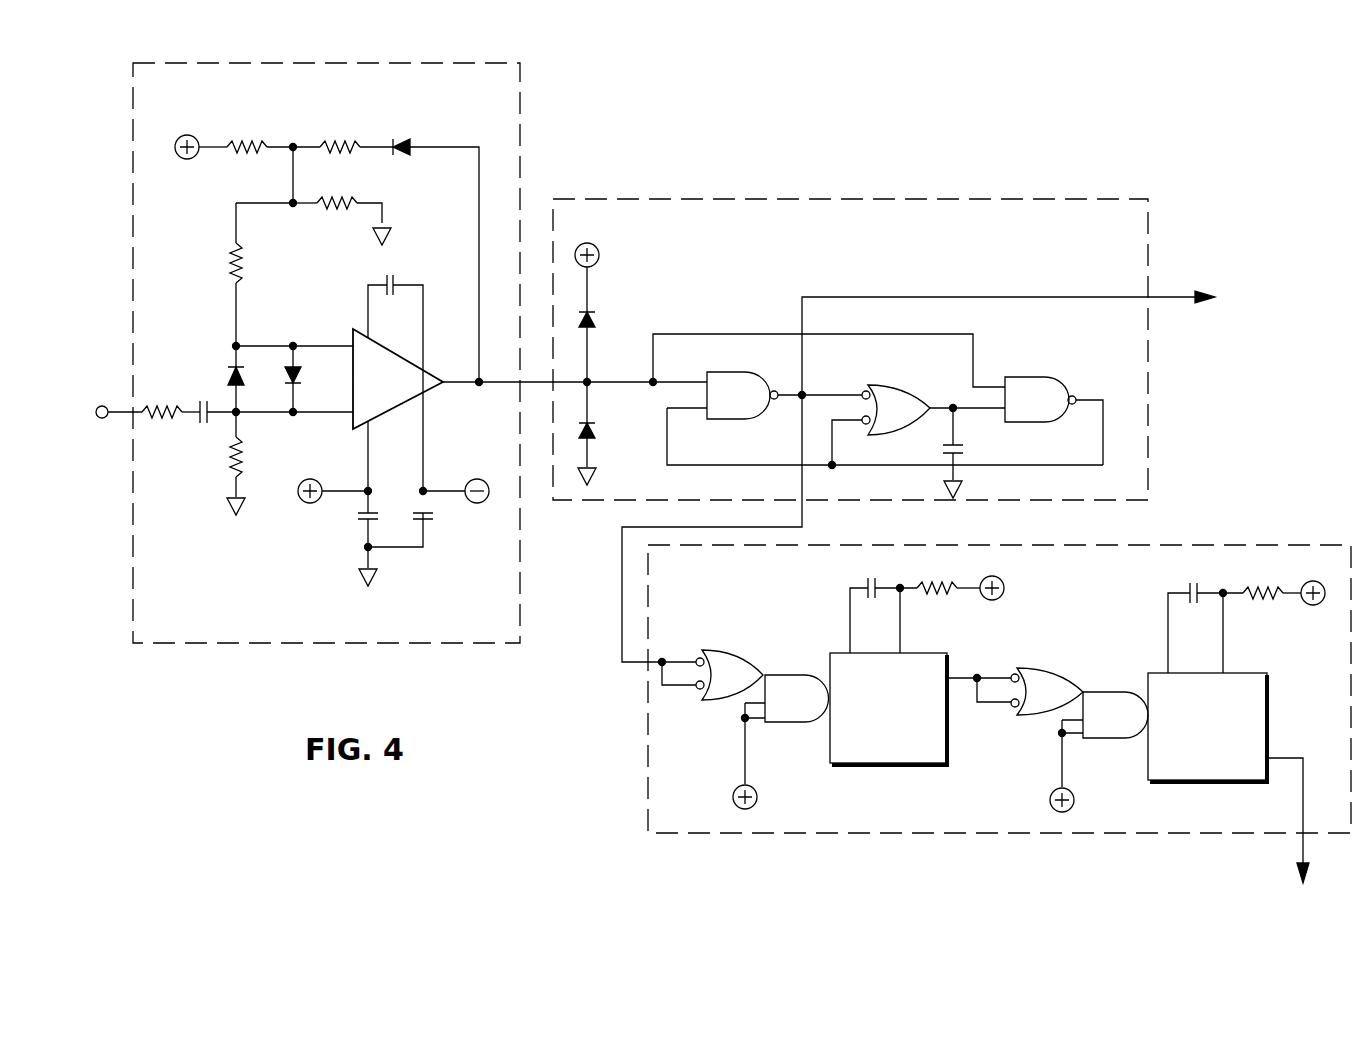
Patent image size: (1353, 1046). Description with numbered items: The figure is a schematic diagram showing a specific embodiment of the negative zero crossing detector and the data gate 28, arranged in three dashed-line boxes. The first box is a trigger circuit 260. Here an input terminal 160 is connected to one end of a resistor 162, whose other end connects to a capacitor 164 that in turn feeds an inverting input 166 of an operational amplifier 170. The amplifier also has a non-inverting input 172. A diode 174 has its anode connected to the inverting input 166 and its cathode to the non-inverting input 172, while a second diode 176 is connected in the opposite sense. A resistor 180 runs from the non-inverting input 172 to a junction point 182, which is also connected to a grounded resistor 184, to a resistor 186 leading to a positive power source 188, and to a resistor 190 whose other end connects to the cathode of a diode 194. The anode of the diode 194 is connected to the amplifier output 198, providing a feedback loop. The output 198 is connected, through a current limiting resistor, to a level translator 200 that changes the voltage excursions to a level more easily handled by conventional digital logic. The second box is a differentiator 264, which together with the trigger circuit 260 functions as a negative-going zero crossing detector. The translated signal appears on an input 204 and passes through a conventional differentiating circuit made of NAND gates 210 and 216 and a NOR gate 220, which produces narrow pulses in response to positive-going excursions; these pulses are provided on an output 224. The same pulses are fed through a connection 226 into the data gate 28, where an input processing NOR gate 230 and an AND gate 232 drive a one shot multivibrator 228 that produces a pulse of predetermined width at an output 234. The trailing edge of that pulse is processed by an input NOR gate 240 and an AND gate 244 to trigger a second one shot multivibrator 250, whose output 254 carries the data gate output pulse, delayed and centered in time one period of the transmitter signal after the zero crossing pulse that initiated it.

The data gate 28 is at (681, 817).
The input terminal 160 is at (122, 408).
The resistor 162 is at (165, 420).
The capacitor 164 is at (203, 426).
The inverting input 166 is at (320, 414).
The operational amplifier 170 is at (409, 396).
The non-inverting input 172 is at (325, 343).
The diode 174 is at (228, 377).
The second diode 176 is at (303, 373).
The resistor 180 is at (234, 260).
The junction point 182 is at (294, 210).
The resistor 184 is at (334, 197).
The resistor 186 is at (255, 140).
The positive power source 188 is at (185, 134).
The resistor 190 is at (340, 142).
The diode 194 is at (410, 145).
The output 198 is at (500, 386).
The level translator 200 is at (628, 415).
The input 204 is at (632, 380).
The NAND gate 210 is at (751, 406).
The NAND gate 216 is at (1053, 409).
The NOR gate 220 is at (917, 420).
The output 224 is at (1172, 297).
The connection 226 is at (622, 612).
The one shot multivibrator 228 is at (860, 764).
The NOR gate 230 is at (748, 676).
The AND gate 232 is at (806, 704).
The output 234 is at (960, 677).
The NOR gate 240 is at (1063, 695).
The AND gate 244 is at (1124, 724).
The second one shot multivibrator 250 is at (1182, 781).
The output 254 is at (1303, 795).
The trigger circuit 260 is at (179, 627).
The differentiator 264 is at (1124, 235).